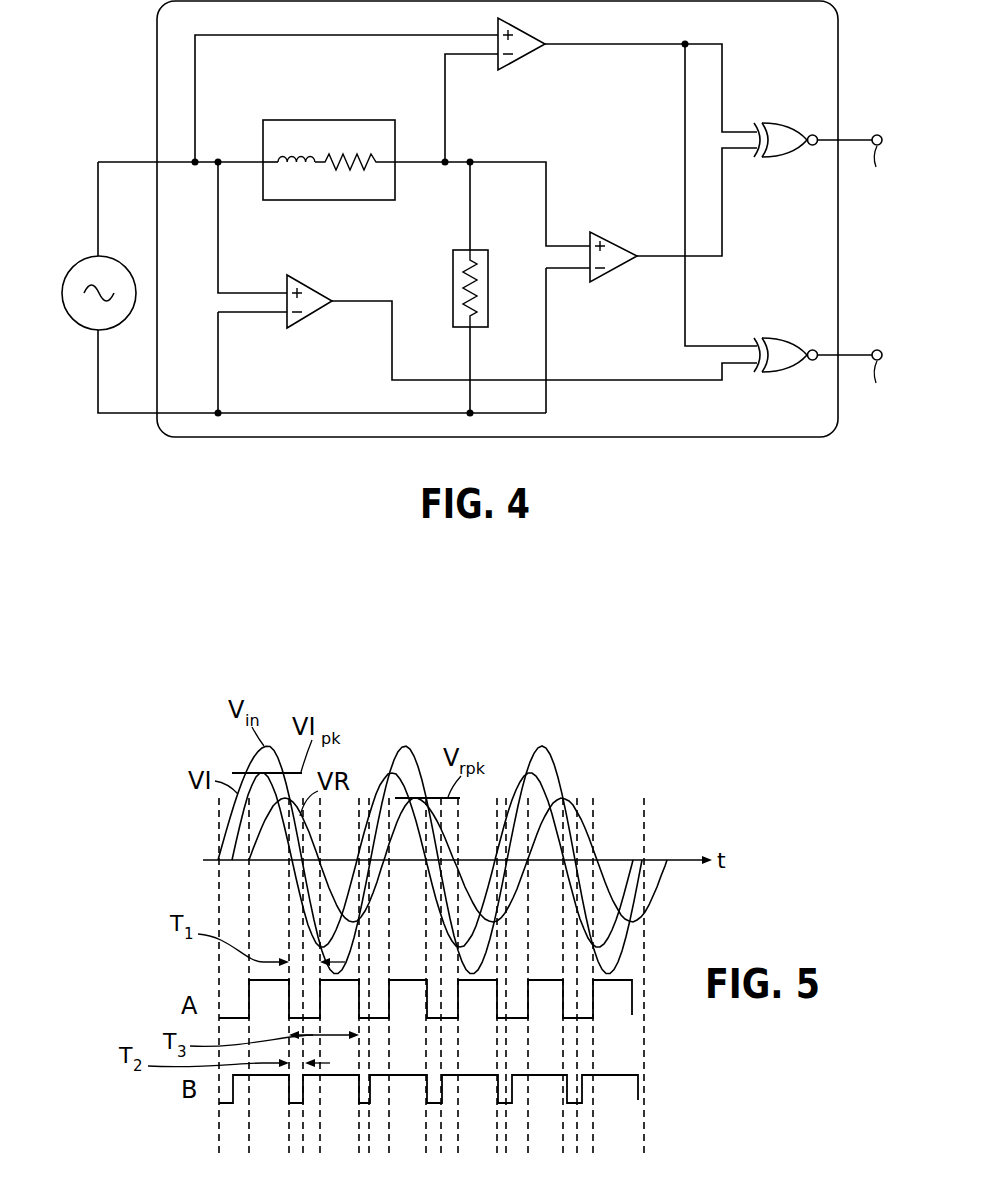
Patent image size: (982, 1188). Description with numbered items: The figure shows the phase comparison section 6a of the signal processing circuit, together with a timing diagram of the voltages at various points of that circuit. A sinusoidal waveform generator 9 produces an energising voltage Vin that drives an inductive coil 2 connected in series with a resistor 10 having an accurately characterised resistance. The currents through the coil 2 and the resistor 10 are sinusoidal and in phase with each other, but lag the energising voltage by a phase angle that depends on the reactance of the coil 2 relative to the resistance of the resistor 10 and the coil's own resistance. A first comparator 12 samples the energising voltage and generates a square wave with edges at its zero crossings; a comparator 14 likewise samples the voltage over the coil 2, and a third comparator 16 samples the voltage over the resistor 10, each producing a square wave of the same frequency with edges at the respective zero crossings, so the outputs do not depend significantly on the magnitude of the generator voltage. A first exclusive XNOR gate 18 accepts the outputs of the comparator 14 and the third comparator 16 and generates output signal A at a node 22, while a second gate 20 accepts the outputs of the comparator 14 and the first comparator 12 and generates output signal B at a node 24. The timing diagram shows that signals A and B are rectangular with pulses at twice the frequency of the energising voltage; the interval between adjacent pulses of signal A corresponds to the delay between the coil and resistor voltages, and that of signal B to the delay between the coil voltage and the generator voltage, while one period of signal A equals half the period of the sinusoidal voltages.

The inductive coil 2 is at (329, 119).
The phase comparison section 6a is at (318, 440).
The sinusoidal waveform generator 9 is at (75, 322).
The resistor 10 is at (453, 272).
The first comparator 12 is at (306, 285).
The comparator 14 is at (521, 58).
The third comparator 16 is at (609, 242).
The first exclusive XNOR gate 18 is at (781, 126).
The second gate 20 is at (791, 341).
The node 22 is at (878, 134).
The node 24 is at (878, 349).